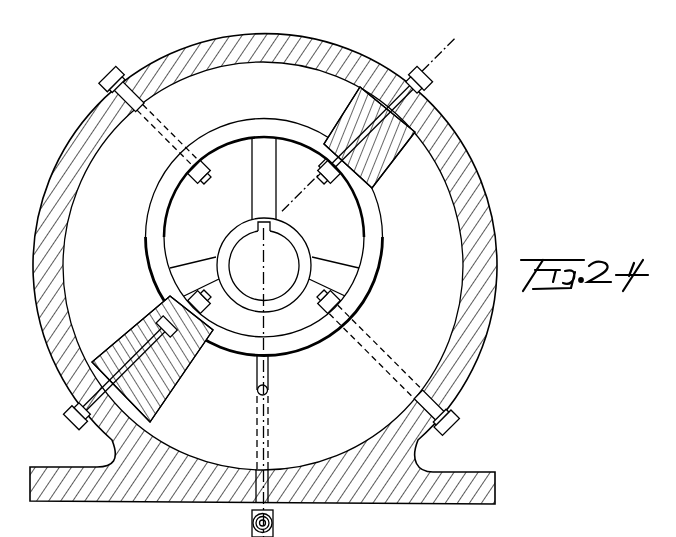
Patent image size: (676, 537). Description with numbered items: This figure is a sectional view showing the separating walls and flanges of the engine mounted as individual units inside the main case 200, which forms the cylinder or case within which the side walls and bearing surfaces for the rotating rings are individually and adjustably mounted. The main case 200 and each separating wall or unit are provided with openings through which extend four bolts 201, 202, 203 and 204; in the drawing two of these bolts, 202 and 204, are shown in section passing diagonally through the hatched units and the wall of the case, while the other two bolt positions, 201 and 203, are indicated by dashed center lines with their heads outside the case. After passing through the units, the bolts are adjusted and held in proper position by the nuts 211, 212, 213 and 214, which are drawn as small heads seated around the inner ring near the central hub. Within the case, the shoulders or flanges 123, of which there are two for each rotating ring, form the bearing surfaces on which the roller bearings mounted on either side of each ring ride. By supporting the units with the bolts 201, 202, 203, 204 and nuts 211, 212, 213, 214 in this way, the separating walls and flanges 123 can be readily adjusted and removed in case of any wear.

The main case 200 is at (479, 181).
The flanges 123 is at (375, 283).
The bolt 201 is at (373, 344).
The bolt 202 is at (132, 353).
The bolt 203 is at (168, 121).
The bolt 204 is at (376, 124).
The nut 211 is at (323, 276).
The nut 212 is at (215, 274).
The nut 213 is at (202, 183).
The nut 214 is at (328, 184).